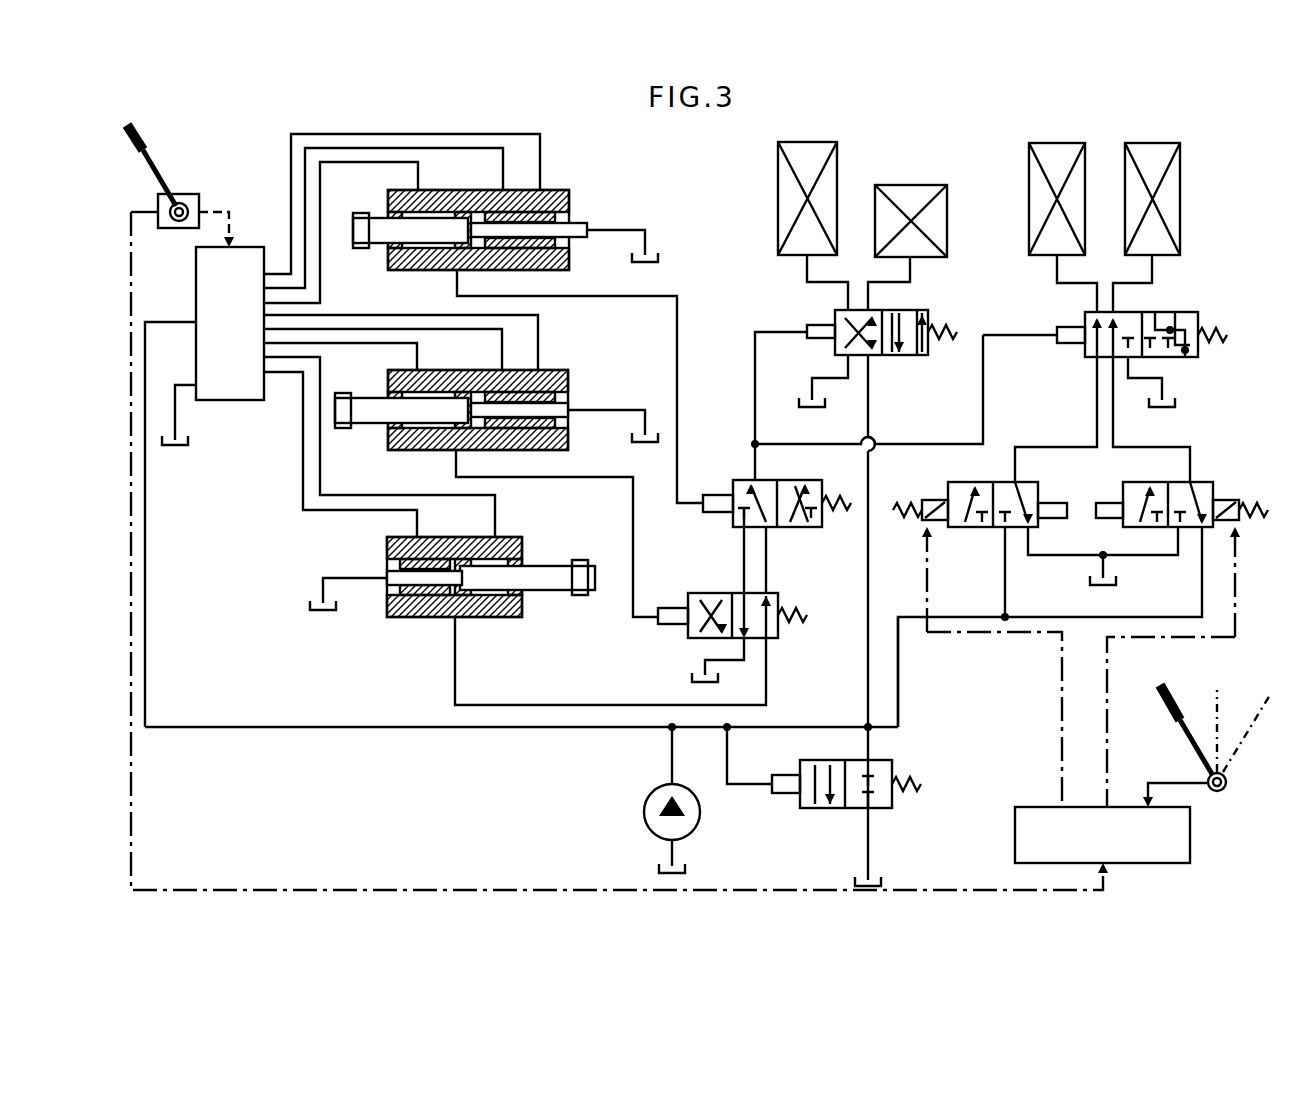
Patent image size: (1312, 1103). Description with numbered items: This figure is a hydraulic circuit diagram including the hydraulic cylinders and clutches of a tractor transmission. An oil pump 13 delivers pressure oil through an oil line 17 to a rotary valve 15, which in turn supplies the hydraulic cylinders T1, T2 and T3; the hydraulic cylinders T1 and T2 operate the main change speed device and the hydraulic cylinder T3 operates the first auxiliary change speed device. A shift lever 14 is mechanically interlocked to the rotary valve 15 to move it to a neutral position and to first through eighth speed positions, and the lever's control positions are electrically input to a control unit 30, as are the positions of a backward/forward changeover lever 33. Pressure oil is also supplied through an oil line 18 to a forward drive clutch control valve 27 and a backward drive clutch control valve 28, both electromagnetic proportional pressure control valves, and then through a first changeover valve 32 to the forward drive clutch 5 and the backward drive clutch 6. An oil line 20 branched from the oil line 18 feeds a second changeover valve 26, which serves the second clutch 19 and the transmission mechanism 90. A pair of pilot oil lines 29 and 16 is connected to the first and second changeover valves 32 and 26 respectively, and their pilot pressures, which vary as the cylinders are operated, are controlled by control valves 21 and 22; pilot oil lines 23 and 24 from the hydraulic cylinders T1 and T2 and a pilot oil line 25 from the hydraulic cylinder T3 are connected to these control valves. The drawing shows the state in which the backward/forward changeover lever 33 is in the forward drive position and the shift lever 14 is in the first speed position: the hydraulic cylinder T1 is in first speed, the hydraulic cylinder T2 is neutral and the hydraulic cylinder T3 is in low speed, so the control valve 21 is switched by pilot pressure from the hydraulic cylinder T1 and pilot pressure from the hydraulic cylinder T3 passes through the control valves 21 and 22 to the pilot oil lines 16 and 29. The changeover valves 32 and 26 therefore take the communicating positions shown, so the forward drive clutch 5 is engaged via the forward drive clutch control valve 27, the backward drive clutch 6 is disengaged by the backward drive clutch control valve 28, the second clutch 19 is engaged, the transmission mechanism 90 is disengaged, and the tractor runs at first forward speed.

The forward drive clutch 5 is at (1180, 215).
The backward drive clutch 6 is at (1029, 218).
The oil pump 13 is at (645, 805).
The shift lever 14 is at (163, 170).
The rotary valve 15 is at (243, 402).
The pilot oil line 16 is at (755, 367).
The oil line 17 is at (293, 730).
The oil line 18 is at (898, 683).
The second clutch 19 is at (778, 183).
The oil line 20 is at (870, 408).
The control valve 21 is at (800, 527).
The control valve 22 is at (780, 640).
The pilot oil line 23 is at (682, 315).
The pilot oil line 24 is at (633, 522).
The pilot oil line 25 is at (455, 672).
The second changeover valve 26 is at (928, 318).
The forward drive clutch control valve 27 is at (1195, 480).
The backward drive clutch control valve 28 is at (975, 530).
The pilot oil line 29 is at (1032, 337).
The control unit 30 is at (1190, 852).
The first changeover valve 32 is at (1185, 312).
The backward/forward changeover lever 33 is at (1185, 745).
The transmission mechanism 90 is at (905, 185).
The hydraulic cylinder T1 is at (555, 192).
The hydraulic cylinder T2 is at (552, 370).
The hydraulic cylinder T3 is at (503, 618).